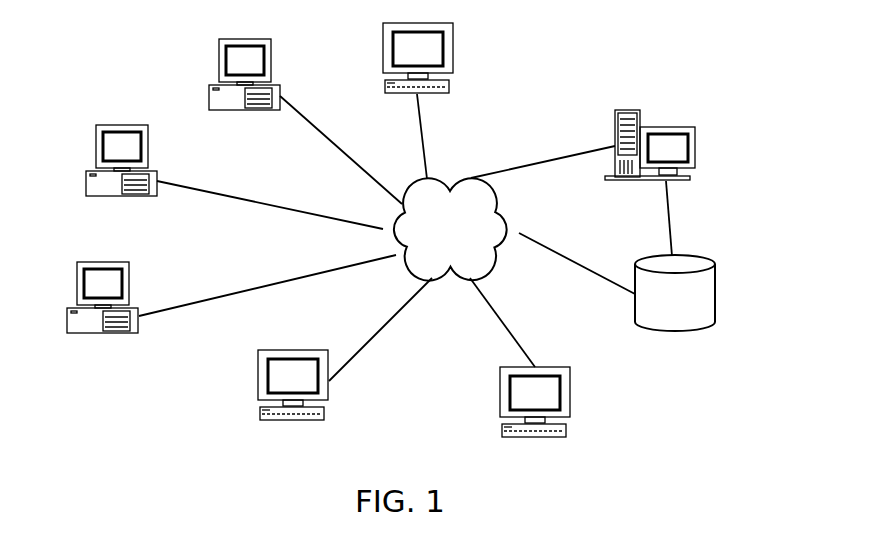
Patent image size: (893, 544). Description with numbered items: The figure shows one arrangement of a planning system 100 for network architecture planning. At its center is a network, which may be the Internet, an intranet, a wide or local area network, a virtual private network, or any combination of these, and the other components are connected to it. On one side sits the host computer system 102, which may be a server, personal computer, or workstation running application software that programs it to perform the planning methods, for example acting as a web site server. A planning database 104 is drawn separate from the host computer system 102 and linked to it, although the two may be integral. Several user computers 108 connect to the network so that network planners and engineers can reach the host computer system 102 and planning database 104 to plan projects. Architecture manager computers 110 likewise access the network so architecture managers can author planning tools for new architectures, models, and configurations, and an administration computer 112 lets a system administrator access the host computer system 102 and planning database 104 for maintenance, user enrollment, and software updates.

The planning system 100 is at (592, 55).
The host computer system 102 is at (697, 140).
The planning database 104 is at (658, 311).
The user computers 108 is at (272, 51).
The architecture manager computers 110 is at (258, 375).
The administration computer 112 is at (454, 46).